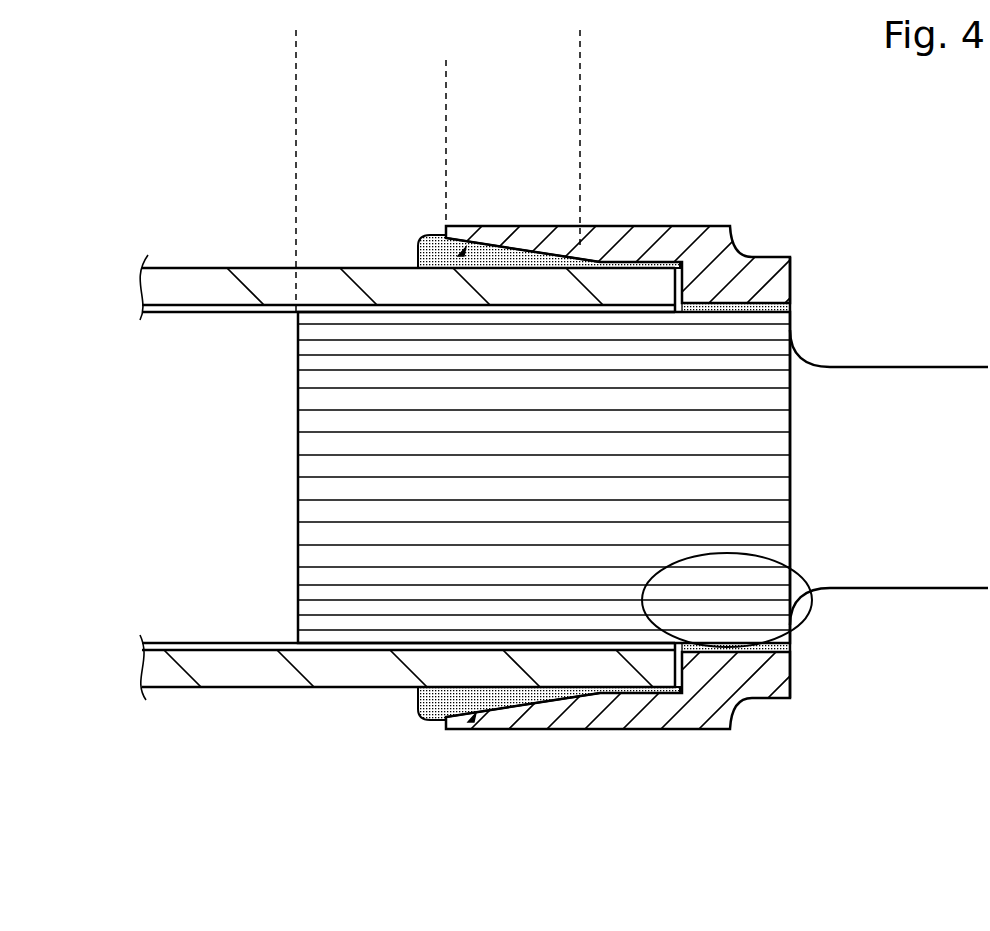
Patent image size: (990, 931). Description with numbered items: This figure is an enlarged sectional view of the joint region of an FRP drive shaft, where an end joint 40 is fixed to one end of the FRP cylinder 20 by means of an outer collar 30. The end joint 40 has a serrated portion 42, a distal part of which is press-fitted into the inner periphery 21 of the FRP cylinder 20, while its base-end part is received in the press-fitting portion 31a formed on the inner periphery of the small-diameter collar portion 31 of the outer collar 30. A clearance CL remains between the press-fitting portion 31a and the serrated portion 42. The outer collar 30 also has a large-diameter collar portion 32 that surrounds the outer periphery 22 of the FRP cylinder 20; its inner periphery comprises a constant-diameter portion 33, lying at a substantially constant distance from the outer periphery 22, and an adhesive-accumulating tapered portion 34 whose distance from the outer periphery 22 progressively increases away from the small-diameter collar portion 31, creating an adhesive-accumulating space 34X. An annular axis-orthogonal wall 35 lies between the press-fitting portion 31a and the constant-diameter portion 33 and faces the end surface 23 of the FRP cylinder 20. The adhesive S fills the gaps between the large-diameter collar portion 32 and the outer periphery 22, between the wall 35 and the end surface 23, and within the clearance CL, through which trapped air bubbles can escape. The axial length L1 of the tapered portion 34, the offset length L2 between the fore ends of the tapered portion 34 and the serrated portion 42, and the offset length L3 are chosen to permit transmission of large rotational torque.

The FRP cylinder 20 is at (516, 413).
The inner periphery 21 is at (178, 308).
The outer periphery 22 is at (208, 267).
The end surface 23 is at (680, 277).
The outer collar 30 is at (674, 487).
The small-diameter collar portion 31 is at (768, 257).
The press-fitting portion 31a is at (745, 307).
The large-diameter collar portion 32 is at (690, 226).
The constant-diameter portion 33 is at (636, 262).
The adhesive-accumulating tapered portion 34 is at (521, 491).
The adhesive-accumulating space 34X is at (458, 256).
The axis-orthogonal wall 35 is at (813, 588).
The end joint 40 is at (525, 565).
The serrated portion 42 is at (380, 568).
The adhesive S is at (418, 256).
The clearance CL is at (795, 645).
The axial length L1 is at (580, 122).
The offset length L2 is at (446, 97).
The offset length L3 is at (580, 49).